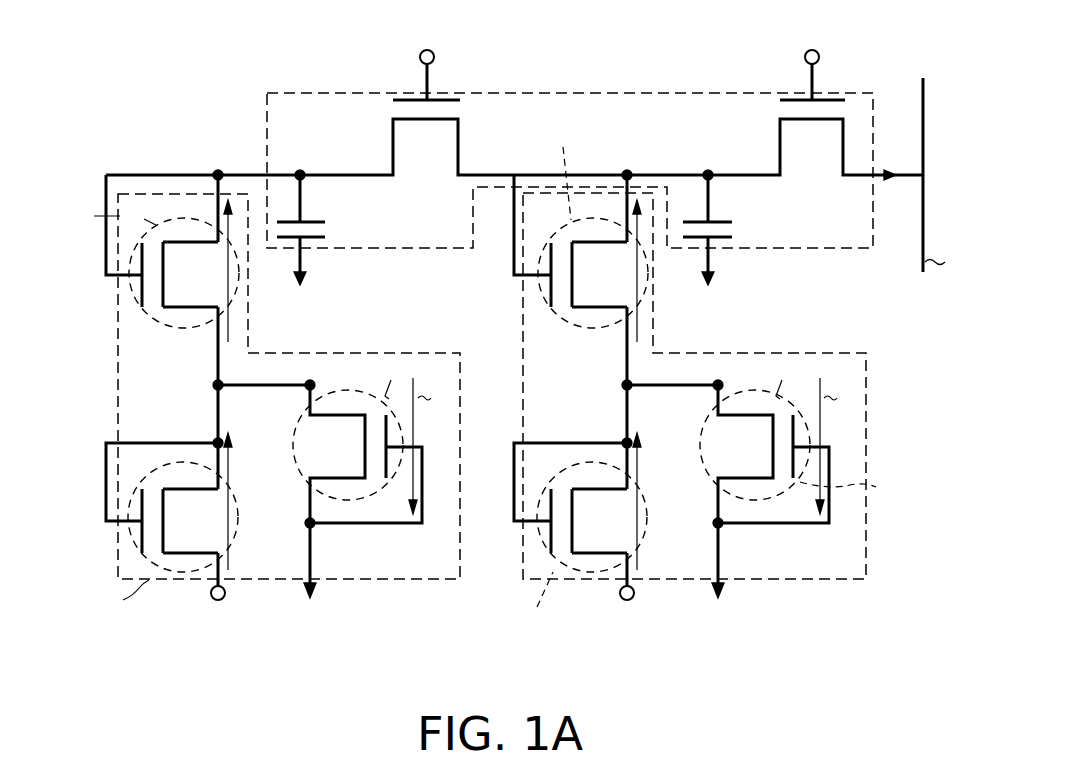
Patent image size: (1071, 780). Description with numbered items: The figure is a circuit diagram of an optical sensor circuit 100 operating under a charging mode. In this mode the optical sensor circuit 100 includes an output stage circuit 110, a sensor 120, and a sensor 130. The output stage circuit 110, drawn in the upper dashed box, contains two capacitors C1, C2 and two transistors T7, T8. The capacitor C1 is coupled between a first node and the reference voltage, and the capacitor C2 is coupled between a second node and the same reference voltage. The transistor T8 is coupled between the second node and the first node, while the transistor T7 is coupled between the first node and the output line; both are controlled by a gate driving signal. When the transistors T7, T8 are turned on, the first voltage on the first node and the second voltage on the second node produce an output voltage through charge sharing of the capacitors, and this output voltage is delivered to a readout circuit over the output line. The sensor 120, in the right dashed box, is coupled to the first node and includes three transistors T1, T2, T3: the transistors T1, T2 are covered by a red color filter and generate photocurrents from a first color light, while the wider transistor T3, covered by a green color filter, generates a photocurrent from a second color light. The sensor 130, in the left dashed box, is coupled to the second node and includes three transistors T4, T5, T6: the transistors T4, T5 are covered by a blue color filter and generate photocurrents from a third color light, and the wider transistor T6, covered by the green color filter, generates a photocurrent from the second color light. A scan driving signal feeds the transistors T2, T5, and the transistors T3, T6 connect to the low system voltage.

The optical sensor circuit 100 is at (887, 693).
The output stage circuit 110 is at (571, 92).
The sensor 120 is at (866, 548).
The sensor 130 is at (118, 353).
The transistor T1 is at (599, 280).
The transistor T2 is at (587, 510).
The transistor T3 is at (778, 506).
The transistor T4 is at (190, 280).
The transistor T5 is at (178, 510).
The transistor T6 is at (370, 506).
The transistor T7 is at (811, 152).
The transistor T8 is at (425, 152).
The capacitor C1 is at (723, 243).
The capacitor C2 is at (314, 243).